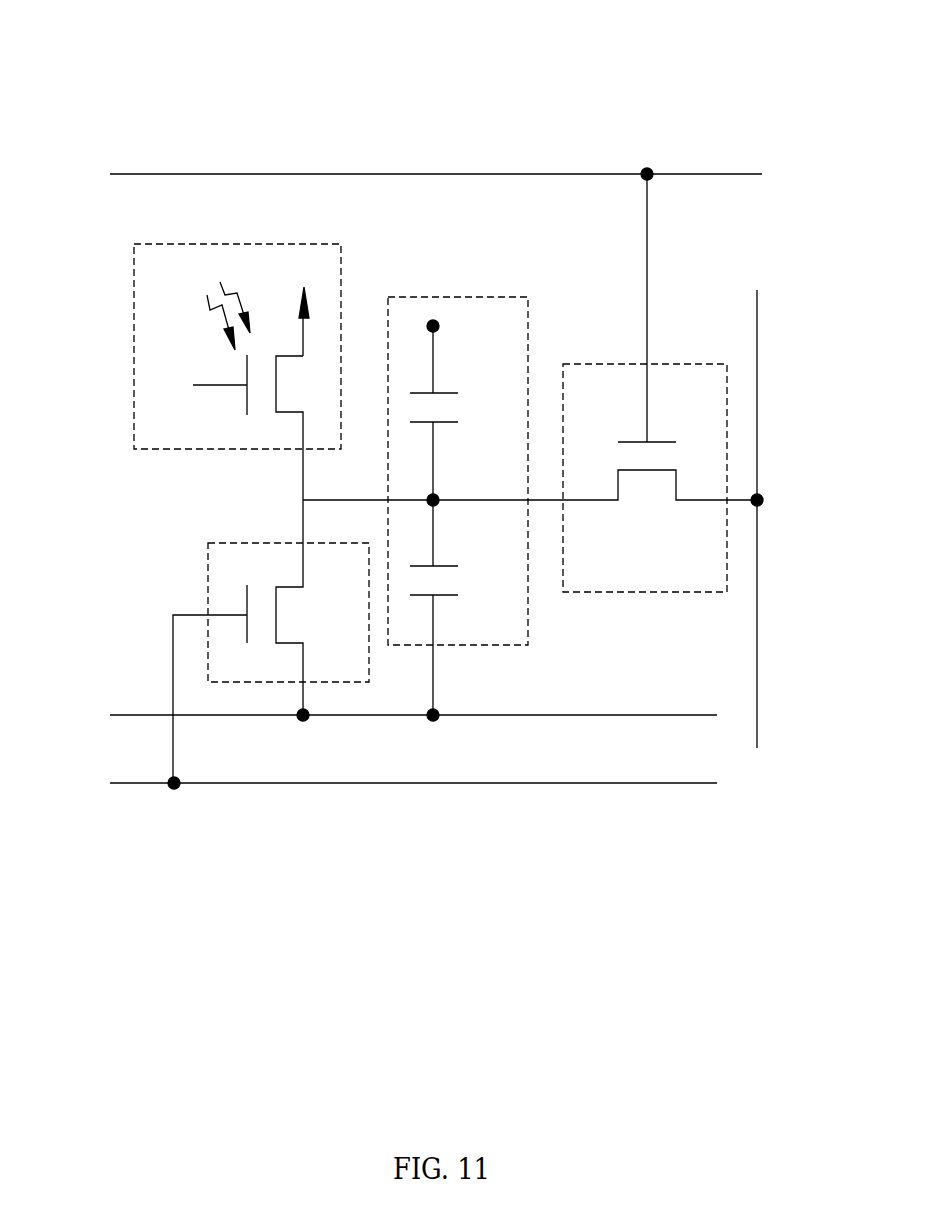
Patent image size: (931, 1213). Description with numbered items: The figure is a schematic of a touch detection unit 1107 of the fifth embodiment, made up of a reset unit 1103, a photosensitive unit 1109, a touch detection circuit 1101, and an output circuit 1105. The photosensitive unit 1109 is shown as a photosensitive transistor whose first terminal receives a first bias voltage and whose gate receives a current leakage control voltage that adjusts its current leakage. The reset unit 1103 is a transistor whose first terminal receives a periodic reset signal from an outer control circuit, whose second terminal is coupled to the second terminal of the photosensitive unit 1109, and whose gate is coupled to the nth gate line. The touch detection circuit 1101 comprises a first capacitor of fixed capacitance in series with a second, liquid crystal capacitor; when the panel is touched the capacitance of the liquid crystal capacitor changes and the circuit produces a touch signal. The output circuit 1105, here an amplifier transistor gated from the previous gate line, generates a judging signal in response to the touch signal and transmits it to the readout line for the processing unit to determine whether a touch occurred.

The touch detection unit 1107 is at (110, 42).
The photosensitive unit 1109 is at (134, 326).
The touch detection circuit 1101 is at (483, 297).
The reset unit 1103 is at (208, 558).
The output circuit 1105 is at (727, 437).